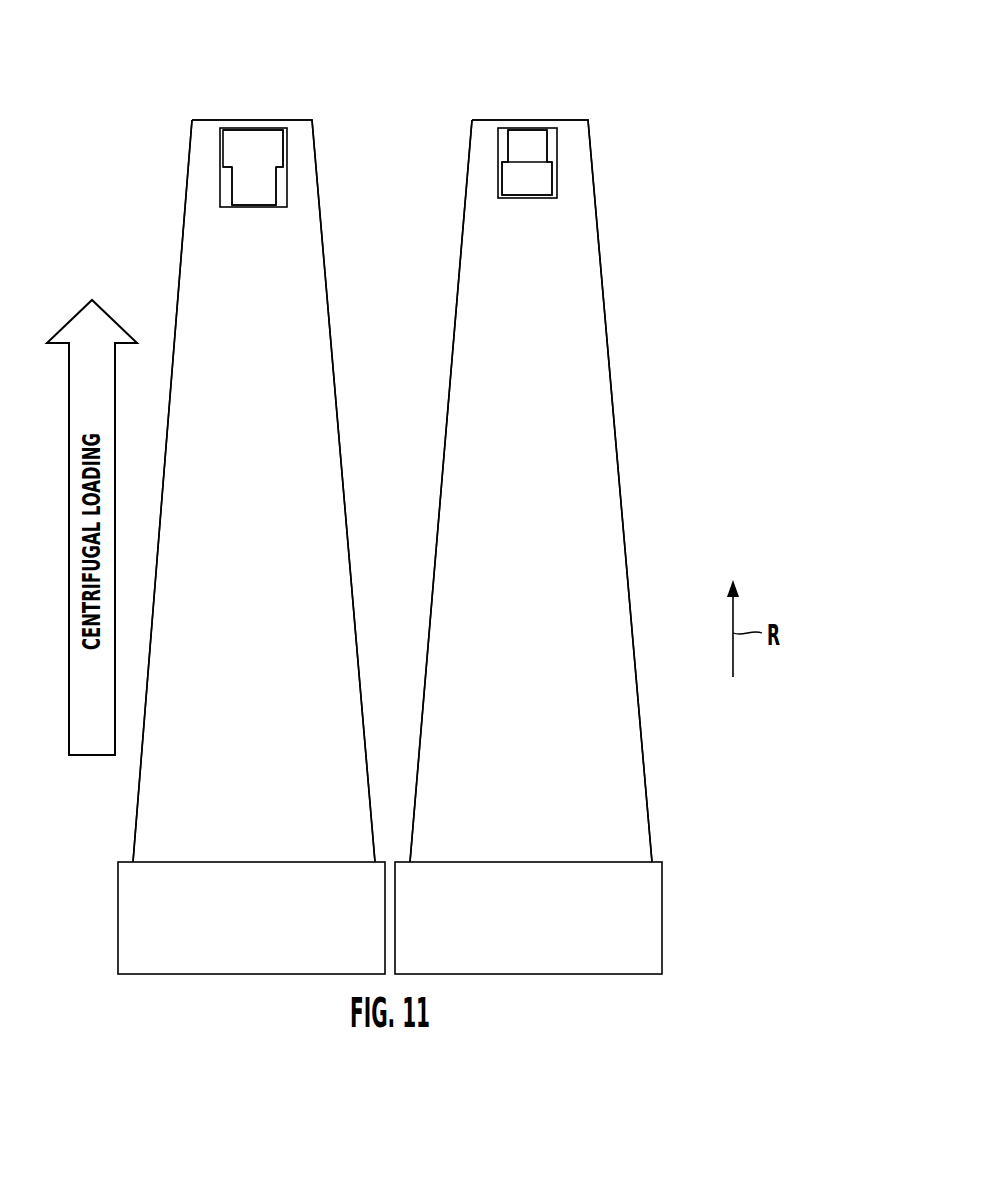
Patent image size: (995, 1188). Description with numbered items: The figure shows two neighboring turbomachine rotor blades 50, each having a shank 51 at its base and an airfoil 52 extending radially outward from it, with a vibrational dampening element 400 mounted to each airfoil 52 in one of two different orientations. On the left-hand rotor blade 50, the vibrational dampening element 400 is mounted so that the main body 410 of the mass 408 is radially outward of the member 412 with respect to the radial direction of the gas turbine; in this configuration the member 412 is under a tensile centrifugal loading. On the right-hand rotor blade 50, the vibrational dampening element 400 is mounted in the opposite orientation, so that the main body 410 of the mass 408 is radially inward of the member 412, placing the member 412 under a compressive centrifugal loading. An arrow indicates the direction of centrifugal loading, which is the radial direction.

The rotor blade 50 is at (117, 105).
The shank 51 is at (129, 922).
The airfoil 52 is at (310, 367).
The vibrational dampening element 400 is at (222, 140).
The mass 408 is at (252, 160).
The main body 410 is at (268, 148).
The member 412 is at (265, 190).